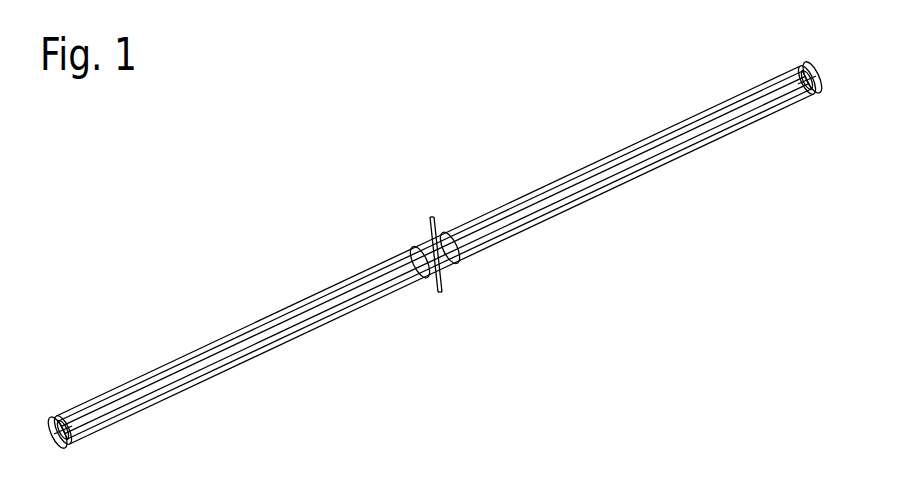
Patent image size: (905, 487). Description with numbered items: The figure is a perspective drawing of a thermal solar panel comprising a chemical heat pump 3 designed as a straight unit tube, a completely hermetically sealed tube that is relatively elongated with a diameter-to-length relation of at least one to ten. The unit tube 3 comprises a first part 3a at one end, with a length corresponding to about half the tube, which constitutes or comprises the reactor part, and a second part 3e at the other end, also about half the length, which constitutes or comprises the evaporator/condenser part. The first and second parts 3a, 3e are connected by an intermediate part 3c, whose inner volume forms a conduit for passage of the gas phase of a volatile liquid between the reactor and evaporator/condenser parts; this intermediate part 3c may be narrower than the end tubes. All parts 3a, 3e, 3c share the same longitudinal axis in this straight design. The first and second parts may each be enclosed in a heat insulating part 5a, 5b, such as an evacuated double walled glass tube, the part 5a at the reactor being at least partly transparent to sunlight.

The chemical heat pump 3 is at (502, 92).
The first part 3a is at (333, 302).
The intermediate part 3c is at (437, 250).
The second part 3e is at (623, 167).
The heat insulating part 5a is at (84, 410).
The second end cap 5b is at (722, 104).